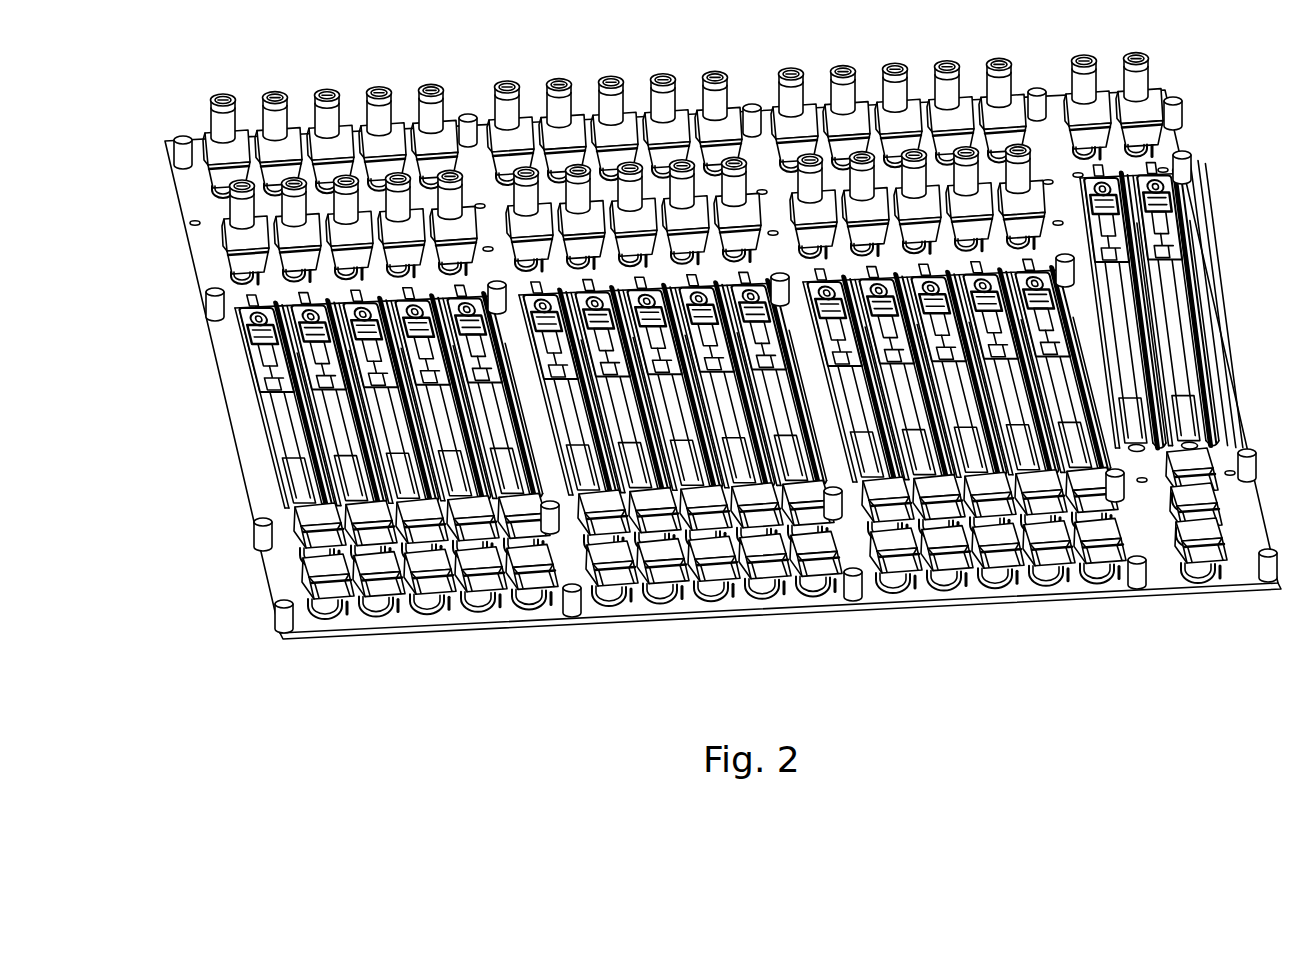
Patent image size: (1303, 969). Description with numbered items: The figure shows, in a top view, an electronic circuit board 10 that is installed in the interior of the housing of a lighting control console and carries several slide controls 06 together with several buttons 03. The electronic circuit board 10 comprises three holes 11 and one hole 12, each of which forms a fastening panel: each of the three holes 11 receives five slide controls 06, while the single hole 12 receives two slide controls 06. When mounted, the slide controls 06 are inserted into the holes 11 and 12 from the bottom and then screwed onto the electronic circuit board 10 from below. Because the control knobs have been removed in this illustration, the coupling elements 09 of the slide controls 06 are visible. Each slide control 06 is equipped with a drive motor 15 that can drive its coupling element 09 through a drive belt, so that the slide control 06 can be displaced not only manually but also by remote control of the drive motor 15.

The button 03 is at (247, 245).
The drive motor 15 is at (237, 330).
The hole 11 is at (242, 352).
The coupling element 09 is at (260, 372).
The electronic circuit board 10 is at (240, 445).
The slide control 06 is at (261, 474).
The hole 12 is at (1107, 380).